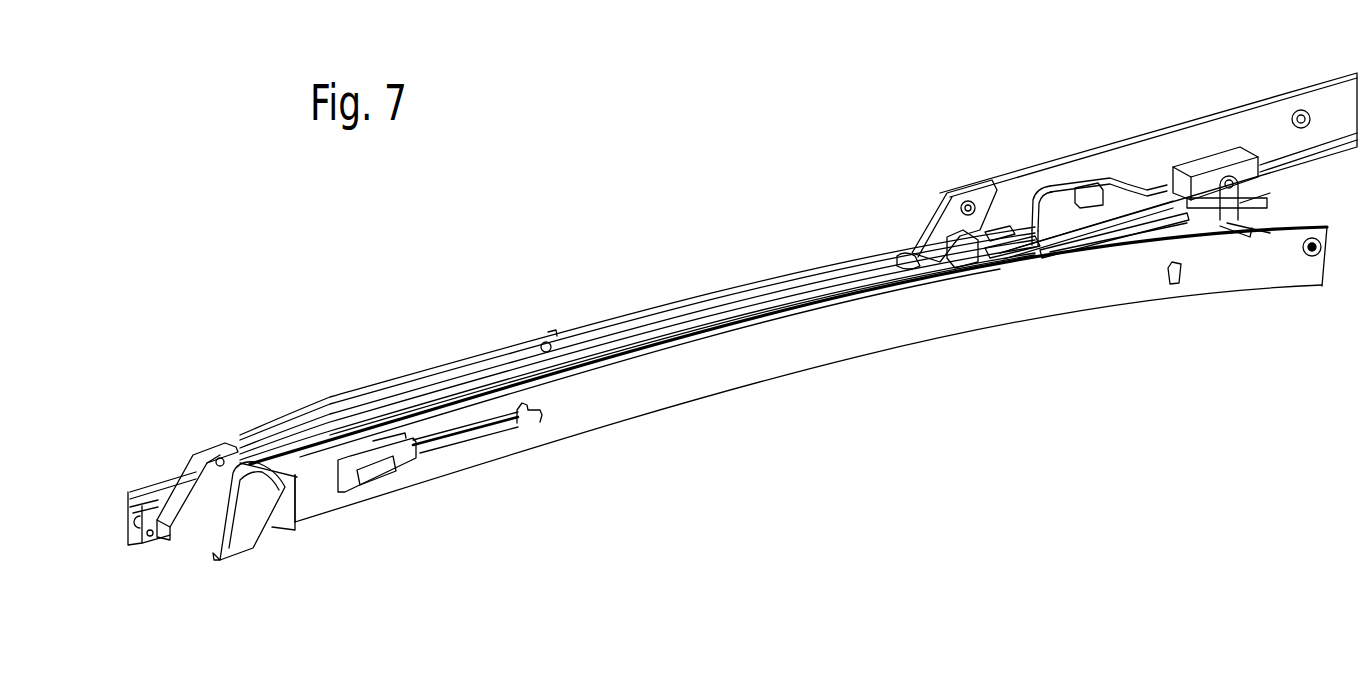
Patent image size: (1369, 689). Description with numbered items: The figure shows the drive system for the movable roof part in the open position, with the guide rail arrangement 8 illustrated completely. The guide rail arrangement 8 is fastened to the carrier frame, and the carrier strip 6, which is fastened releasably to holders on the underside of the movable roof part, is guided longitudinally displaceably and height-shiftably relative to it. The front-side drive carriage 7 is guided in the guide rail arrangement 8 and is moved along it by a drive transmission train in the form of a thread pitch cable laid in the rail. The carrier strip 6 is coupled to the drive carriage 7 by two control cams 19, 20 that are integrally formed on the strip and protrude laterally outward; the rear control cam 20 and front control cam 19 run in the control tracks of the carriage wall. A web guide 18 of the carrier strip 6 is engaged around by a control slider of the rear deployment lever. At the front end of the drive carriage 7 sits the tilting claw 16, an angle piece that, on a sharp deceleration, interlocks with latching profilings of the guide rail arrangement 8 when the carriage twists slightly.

The carrier strip 6 is at (1173, 153).
The drive carriage 7 is at (1060, 247).
The guide rail arrangement 8 is at (773, 367).
The tilting claw 16 is at (1020, 250).
The web guide 18 is at (1273, 157).
The front control cam 19 is at (1028, 213).
The rear control cam 20 is at (1087, 187).